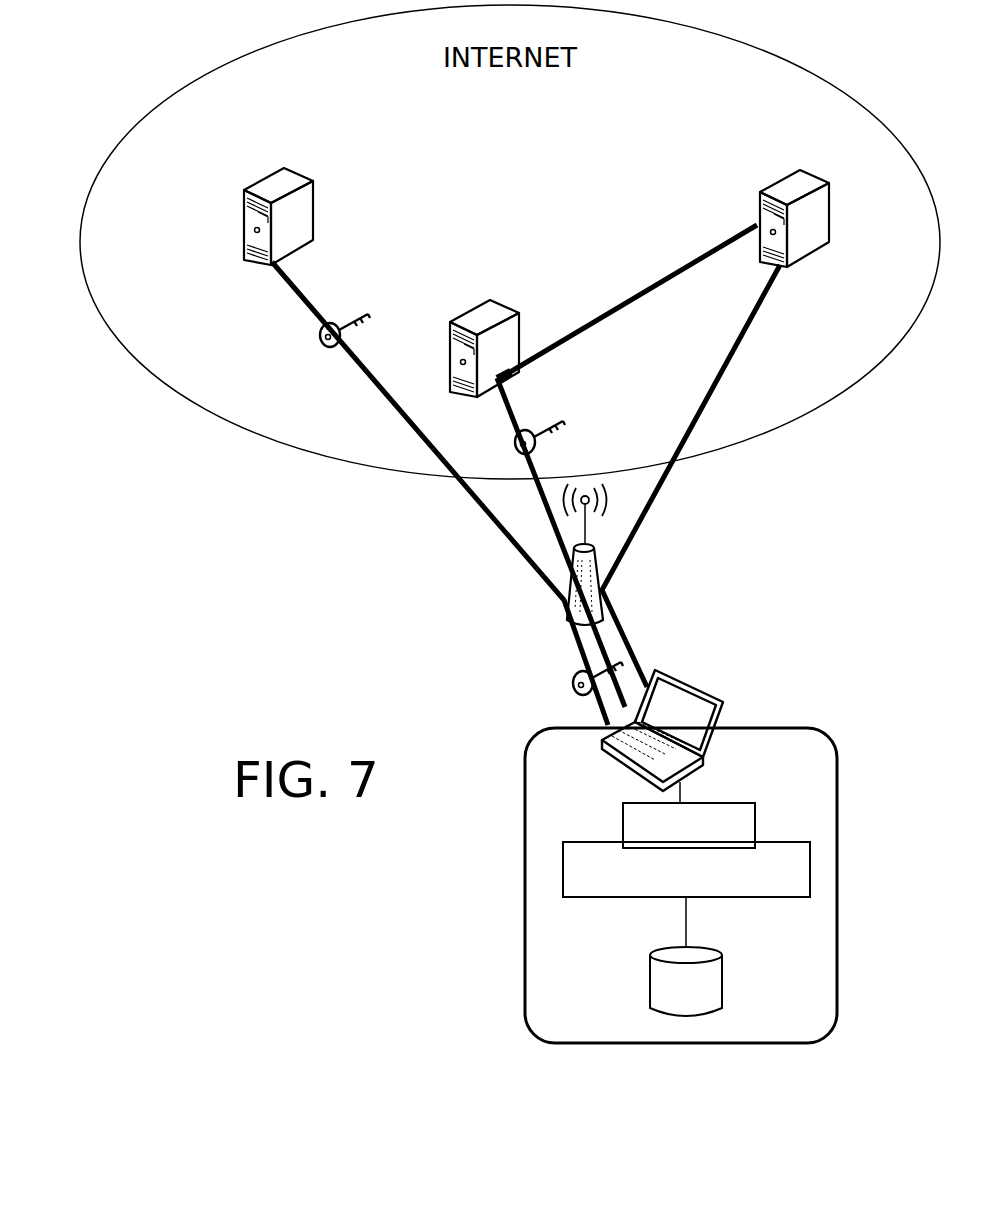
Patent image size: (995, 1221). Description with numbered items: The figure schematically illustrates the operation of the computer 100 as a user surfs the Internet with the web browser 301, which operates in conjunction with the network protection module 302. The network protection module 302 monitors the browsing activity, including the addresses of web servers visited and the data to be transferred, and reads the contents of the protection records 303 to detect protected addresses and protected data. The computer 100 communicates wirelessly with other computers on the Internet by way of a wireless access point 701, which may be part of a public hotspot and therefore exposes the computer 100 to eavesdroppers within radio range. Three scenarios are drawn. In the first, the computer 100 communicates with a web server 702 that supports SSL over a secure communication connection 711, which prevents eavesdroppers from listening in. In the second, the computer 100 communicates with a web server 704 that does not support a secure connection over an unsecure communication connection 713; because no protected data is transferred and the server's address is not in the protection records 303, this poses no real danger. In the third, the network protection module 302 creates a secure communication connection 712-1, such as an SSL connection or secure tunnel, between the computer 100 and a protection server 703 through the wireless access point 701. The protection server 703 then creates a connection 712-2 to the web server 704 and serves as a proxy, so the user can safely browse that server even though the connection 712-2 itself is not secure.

The computer 100 is at (712, 692).
The web browser 301 is at (755, 820).
The network protection module 302 is at (563, 875).
The protection records 303 is at (667, 1013).
The wireless access point 701 is at (600, 552).
The web server 702 is at (313, 205).
The protection server 703 is at (513, 300).
The web server 704 is at (787, 170).
The secure communication connection 711 is at (463, 492).
The secure communication connection 712-1 is at (508, 402).
The connection 712-2 is at (685, 270).
The unsecure communication connection 713 is at (653, 495).